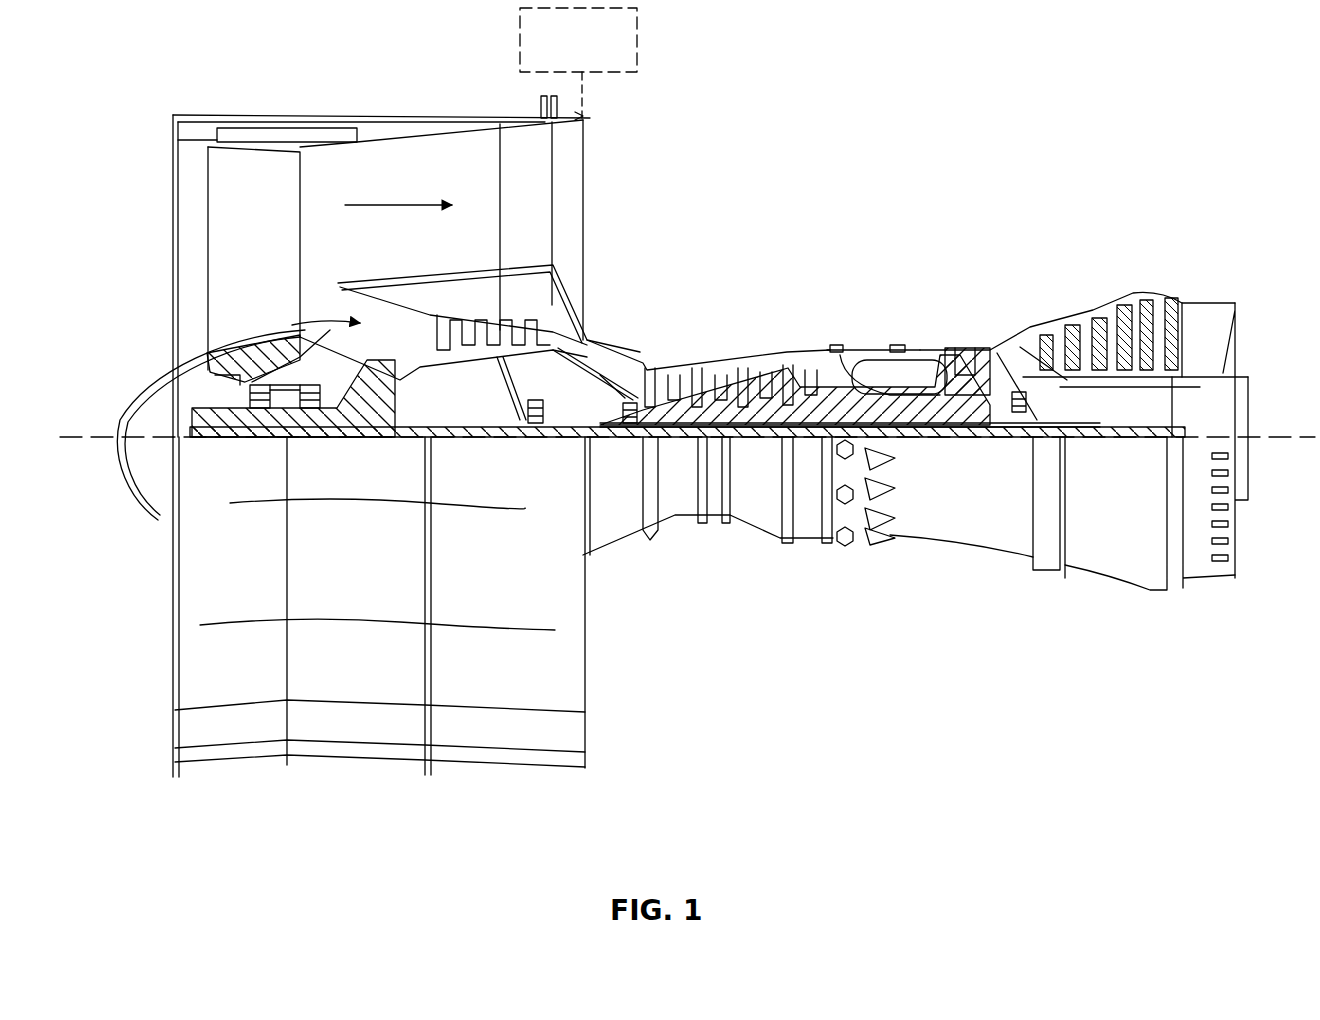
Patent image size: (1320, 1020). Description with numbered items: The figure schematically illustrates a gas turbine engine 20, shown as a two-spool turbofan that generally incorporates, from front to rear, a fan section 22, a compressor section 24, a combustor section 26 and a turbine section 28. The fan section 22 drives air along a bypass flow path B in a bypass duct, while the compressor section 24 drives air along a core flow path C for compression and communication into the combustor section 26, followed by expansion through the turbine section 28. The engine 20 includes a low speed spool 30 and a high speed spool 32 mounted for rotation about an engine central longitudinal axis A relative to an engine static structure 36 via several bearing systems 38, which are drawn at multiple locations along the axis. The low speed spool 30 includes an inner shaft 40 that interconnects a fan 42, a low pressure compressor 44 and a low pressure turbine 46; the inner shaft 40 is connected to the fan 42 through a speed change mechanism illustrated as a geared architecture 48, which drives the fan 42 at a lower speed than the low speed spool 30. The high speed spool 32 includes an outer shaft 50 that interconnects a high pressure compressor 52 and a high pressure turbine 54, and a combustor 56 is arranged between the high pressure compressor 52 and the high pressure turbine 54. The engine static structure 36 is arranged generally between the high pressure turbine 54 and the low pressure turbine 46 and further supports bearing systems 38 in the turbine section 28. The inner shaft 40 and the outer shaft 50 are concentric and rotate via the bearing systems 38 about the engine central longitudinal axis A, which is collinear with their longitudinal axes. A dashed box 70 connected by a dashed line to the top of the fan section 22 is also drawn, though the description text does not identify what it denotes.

The gas turbine engine 20 is at (687, 272).
The fan section 22 is at (283, 105).
The compressor section 24 is at (713, 258).
The combustor section 26 is at (928, 258).
The turbine section 28 is at (1050, 258).
The low speed spool 30 is at (772, 442).
The high speed spool 32 is at (822, 365).
The engine static structure 36 is at (808, 546).
The bearing systems 38 is at (262, 412).
The inner shaft 40 is at (598, 445).
The fan 42 is at (254, 258).
The low pressure compressor 44 is at (512, 328).
The low pressure turbine 46 is at (1108, 298).
The geared architecture 48 is at (387, 417).
The outer shaft 50 is at (925, 440).
The high pressure compressor 52 is at (708, 385).
The high pressure turbine 54 is at (965, 352).
The combustor 56 is at (880, 370).
The controller 70 is at (640, 32).
The engine central longitudinal axis A is at (1268, 432).
The bypass flow path B is at (390, 204).
The core flow path C is at (292, 325).